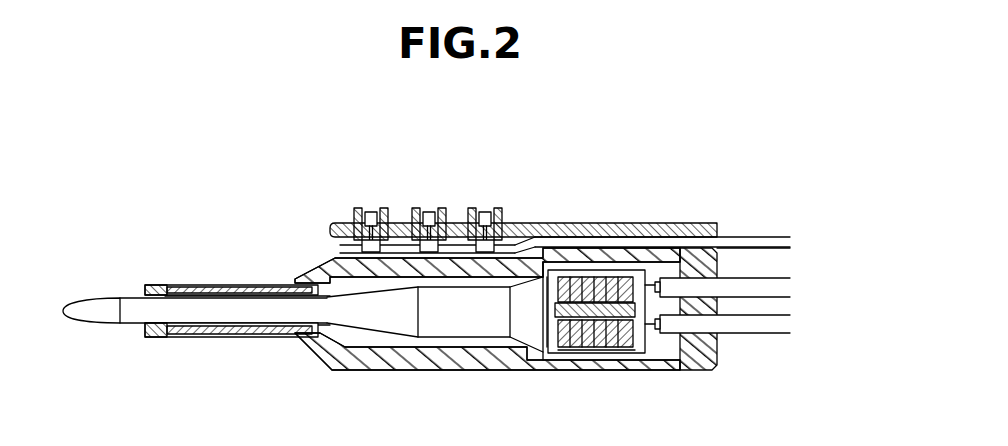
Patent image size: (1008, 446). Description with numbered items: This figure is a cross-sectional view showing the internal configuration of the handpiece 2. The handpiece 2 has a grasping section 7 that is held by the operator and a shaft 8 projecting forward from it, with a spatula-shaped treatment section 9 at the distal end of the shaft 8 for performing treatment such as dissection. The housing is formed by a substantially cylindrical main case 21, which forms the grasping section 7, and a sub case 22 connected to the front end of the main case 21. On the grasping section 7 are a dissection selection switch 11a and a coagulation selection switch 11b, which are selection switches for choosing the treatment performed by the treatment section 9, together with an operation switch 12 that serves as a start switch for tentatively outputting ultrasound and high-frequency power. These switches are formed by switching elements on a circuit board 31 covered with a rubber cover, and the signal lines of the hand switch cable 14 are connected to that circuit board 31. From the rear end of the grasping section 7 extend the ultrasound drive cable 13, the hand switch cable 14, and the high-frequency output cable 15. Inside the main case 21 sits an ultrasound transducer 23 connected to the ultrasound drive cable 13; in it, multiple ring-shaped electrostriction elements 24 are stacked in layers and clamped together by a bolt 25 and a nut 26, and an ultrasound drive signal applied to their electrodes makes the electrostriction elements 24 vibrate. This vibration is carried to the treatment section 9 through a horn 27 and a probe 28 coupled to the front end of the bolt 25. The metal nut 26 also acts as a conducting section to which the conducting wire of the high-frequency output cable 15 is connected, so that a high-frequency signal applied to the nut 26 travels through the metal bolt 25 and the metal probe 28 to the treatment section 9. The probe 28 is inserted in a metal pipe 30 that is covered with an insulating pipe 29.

The handpiece 2 is at (614, 157).
The grasping section 7 is at (552, 205).
The shaft 8 is at (231, 290).
The treatment section 9 is at (105, 288).
The dissection selection switch 11a is at (371, 199).
The coagulation selection switch 11b is at (429, 199).
The operation switch 12 is at (484, 199).
The ultrasound drive cable 13 is at (772, 277).
The hand switch cable 14 is at (757, 237).
The high-frequency output cable 15 is at (757, 333).
The main case 21 is at (683, 372).
The sub case 22 is at (479, 320).
The ultrasound transducer 23 is at (608, 270).
The electrostriction elements 24 is at (590, 350).
The bolt 25 is at (542, 345).
The nut 26 is at (628, 349).
The horn 27 is at (525, 326).
The probe 28 is at (293, 313).
The insulating pipe 29 is at (225, 340).
The metal pipe 30 is at (192, 340).
The circuit board 31 is at (334, 254).